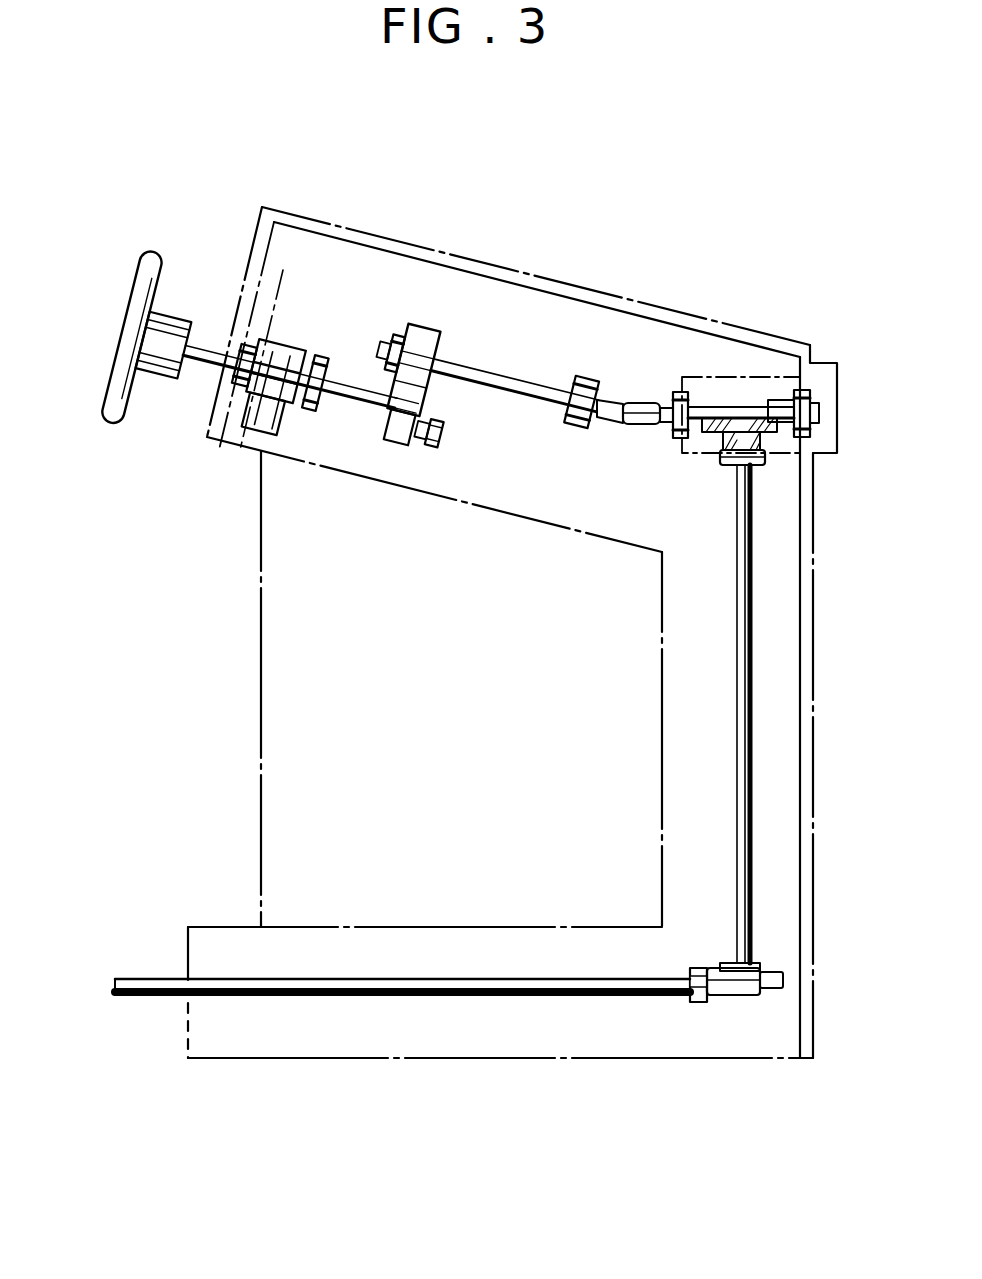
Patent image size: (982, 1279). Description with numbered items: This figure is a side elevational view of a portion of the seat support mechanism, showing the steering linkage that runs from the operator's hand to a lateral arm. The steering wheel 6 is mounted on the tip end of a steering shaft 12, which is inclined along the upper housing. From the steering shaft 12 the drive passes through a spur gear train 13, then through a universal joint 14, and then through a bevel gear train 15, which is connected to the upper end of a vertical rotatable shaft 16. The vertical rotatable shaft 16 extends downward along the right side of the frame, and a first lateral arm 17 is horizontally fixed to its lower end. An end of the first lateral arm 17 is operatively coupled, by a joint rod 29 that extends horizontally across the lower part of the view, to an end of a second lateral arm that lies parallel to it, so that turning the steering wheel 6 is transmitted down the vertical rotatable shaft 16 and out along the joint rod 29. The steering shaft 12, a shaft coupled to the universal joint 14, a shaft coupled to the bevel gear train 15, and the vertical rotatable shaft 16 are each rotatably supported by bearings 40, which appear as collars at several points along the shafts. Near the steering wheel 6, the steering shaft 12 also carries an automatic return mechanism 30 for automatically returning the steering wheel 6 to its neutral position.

The steering wheel 6 is at (120, 336).
The steering shaft 12 is at (210, 367).
The spur gear train 13 is at (427, 327).
The universal joint 14 is at (630, 403).
The bevel gear train 15 is at (755, 375).
The vertical rotatable shaft 16 is at (752, 771).
The first lateral arm 17 is at (770, 990).
The joint rod 29 is at (485, 1000).
The automatic return mechanism 30 is at (289, 338).
The bearings 40 is at (250, 340).